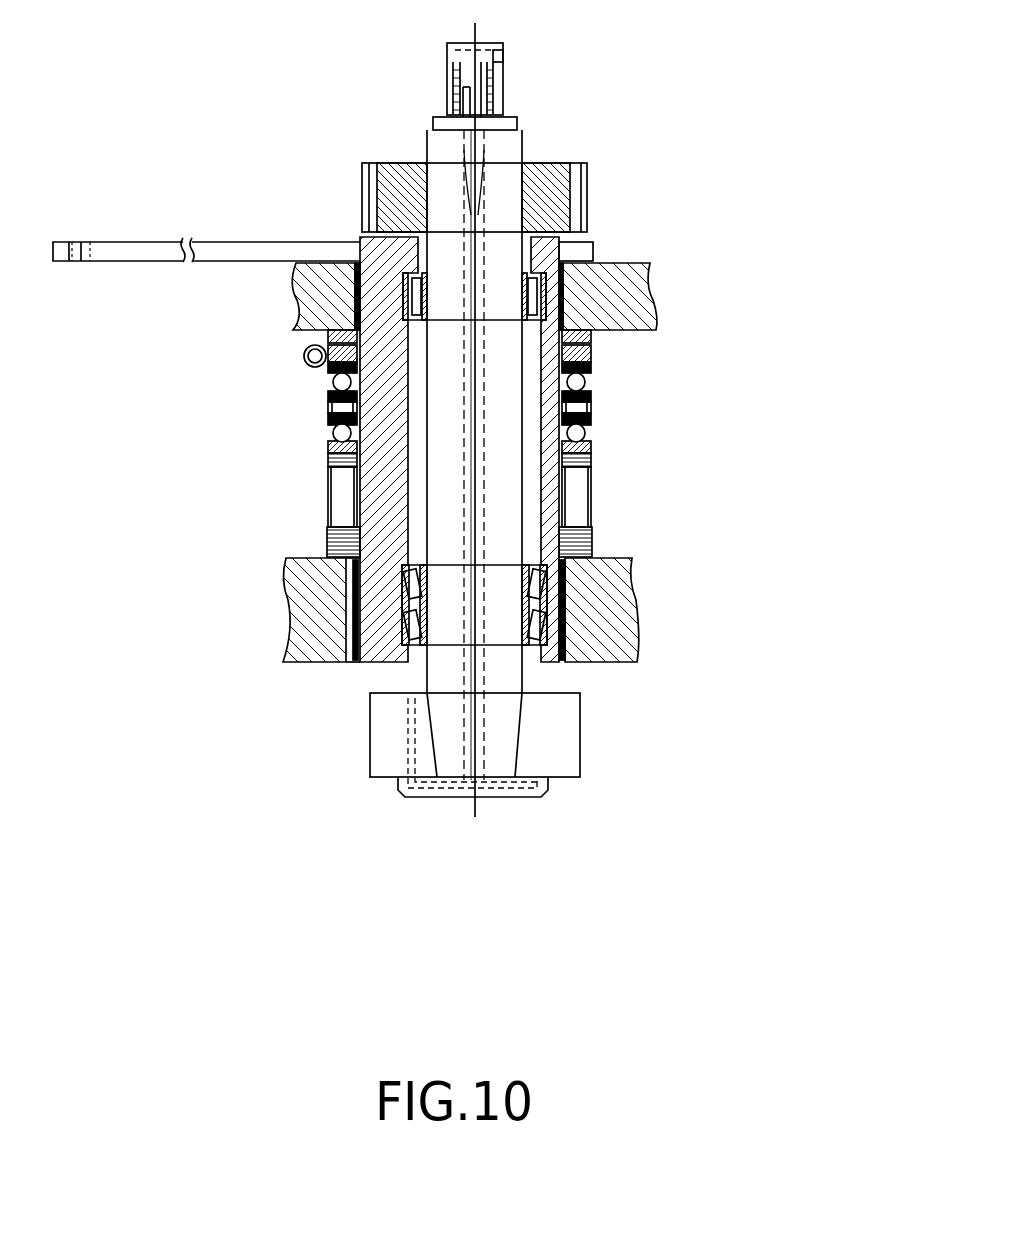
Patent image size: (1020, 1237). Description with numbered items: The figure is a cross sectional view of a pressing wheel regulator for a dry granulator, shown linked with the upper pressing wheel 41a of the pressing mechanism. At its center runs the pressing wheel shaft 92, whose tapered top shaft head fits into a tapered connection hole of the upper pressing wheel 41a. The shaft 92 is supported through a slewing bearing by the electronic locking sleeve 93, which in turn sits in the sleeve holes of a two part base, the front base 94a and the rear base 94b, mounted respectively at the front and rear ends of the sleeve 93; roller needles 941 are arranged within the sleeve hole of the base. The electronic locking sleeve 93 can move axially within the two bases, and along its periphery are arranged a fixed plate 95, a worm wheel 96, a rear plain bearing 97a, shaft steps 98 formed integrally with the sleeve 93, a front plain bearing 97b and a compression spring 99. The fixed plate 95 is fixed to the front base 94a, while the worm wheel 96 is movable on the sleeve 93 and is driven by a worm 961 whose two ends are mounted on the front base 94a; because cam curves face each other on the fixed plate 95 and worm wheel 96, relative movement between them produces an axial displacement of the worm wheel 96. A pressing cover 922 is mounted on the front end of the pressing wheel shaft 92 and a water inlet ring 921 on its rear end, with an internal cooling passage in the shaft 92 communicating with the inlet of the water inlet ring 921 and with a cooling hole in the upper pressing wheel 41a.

The pressing wheel shaft 92 is at (513, 147).
The pressing cover 922 is at (497, 44).
The roller needles 941 is at (568, 268).
The front base 94a is at (623, 307).
The rear base 94b is at (604, 598).
The electronic locking sleeve 93 is at (370, 473).
The fixed plate 95 is at (158, 250).
The worm wheel 96 is at (592, 366).
The worm 961 is at (312, 366).
The rear plain bearing 97a is at (592, 398).
The shaft step 98 is at (592, 433).
The front plain bearing 97b is at (592, 455).
The compression spring 99 is at (586, 489).
The upper pressing wheel 41a is at (560, 718).
The water inlet ring 921 is at (545, 793).